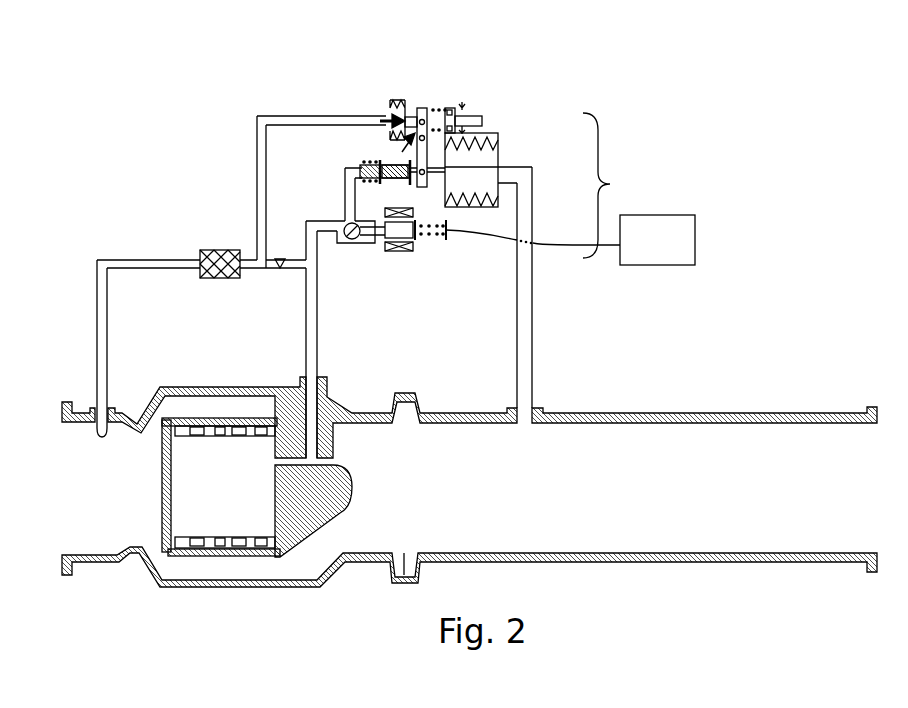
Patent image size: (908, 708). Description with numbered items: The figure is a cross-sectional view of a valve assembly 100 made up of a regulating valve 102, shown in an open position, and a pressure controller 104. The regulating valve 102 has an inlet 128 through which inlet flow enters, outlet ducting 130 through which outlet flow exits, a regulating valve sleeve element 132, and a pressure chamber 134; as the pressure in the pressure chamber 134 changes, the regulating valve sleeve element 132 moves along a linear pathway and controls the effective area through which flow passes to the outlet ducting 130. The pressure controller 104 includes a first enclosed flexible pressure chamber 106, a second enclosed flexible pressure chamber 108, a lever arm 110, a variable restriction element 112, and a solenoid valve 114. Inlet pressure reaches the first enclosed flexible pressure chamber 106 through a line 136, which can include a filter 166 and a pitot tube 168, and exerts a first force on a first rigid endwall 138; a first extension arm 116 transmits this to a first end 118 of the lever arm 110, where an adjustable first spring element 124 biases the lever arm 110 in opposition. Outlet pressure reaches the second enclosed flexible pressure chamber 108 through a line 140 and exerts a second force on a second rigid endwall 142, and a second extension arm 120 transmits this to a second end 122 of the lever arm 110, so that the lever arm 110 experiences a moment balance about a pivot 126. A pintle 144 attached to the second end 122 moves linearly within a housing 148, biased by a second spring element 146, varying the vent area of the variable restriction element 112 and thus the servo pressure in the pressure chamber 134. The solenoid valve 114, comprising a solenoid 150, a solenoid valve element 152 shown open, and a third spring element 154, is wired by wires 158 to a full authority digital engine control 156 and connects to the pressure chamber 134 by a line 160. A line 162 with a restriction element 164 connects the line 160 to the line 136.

The valve assembly 100 is at (150, 103).
The regulating valve 102 is at (177, 384).
The pressure controller 104 is at (613, 185).
The first enclosed flexible pressure chamber 106 is at (397, 99).
The second enclosed flexible pressure chamber 108 is at (497, 140).
The lever arm 110 is at (478, 132).
The variable restriction element 112 is at (376, 154).
The solenoid valve 114 is at (391, 252).
The first extension arm 116 is at (424, 107).
The first end 118 is at (445, 108).
The second extension arm 120 is at (443, 196).
The second end 122 is at (423, 188).
The first spring element 124 is at (463, 100).
The pivot 126 is at (403, 152).
The inlet 128 is at (68, 423).
The outlet ducting 130 is at (857, 424).
The regulating valve sleeve element 132 is at (161, 500).
The pressure chamber 134 is at (238, 489).
The line 136 is at (175, 258).
The first rigid endwall 138 is at (410, 130).
The line 140 is at (533, 342).
The second rigid endwall 142 is at (498, 153).
The pintle 144 is at (345, 172).
The second spring element 146 is at (372, 158).
The housing 148 is at (397, 180).
The solenoid 150 is at (404, 251).
The solenoid valve element 152 is at (352, 240).
The third spring element 154 is at (438, 240).
The full authority digital engine control (FADEC) 156 is at (670, 215).
The wires 158 is at (597, 246).
The line 160 is at (318, 357).
The line 162 is at (292, 270).
The restriction element 164 is at (281, 252).
The filter 166 is at (218, 250).
The pitot tube 168 is at (111, 428).